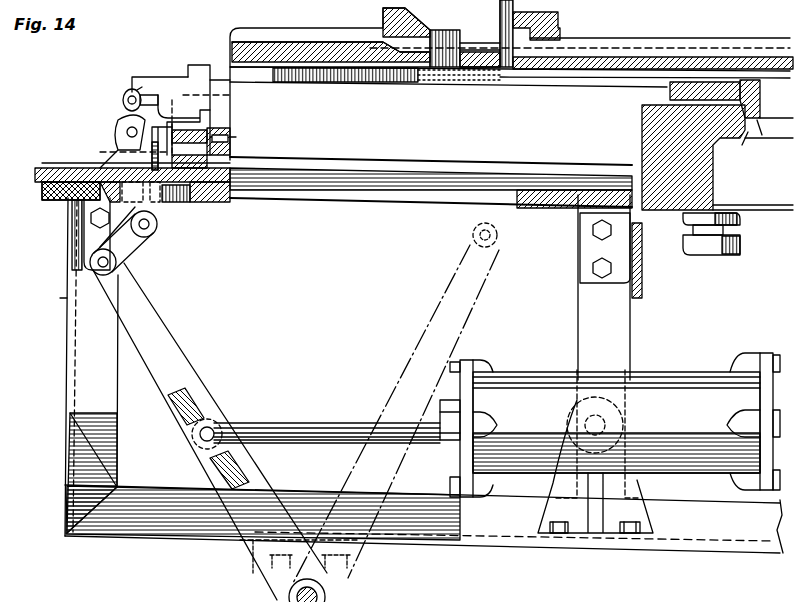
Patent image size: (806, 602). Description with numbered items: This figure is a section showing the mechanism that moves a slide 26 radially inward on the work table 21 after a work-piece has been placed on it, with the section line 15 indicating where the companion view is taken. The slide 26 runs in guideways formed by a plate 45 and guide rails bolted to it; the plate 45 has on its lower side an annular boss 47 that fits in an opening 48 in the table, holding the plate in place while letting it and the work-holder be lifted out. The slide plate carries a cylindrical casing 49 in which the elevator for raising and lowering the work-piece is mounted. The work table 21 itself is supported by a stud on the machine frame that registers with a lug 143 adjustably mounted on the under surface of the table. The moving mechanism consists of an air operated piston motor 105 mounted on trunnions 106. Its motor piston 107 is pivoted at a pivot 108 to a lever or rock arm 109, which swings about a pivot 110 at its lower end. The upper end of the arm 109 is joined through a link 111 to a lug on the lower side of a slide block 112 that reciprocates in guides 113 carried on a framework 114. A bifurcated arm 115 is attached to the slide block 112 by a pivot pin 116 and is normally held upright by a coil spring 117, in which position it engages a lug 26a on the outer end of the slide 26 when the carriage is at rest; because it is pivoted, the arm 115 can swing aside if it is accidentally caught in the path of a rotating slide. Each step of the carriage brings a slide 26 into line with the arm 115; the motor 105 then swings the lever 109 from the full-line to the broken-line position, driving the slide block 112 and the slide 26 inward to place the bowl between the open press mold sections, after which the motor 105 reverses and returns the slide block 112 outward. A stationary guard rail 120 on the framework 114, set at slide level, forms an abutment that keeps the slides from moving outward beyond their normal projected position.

The section line 15- 15 is at (156, 70).
The work table 21 is at (652, 135).
The slide 26 is at (603, 55).
The lug 26a is at (255, 72).
The plate 45 is at (670, 93).
The annular boss 47 is at (762, 135).
The opening 48 is at (742, 145).
The cylindrical casing 49 is at (557, 22).
The air operated piston motor 105 is at (518, 385).
The trunnions 106 is at (622, 398).
The motor piston 107 is at (323, 413).
The pivot 108 is at (210, 425).
The lever or rock arm 109 is at (173, 355).
The pivot 110 is at (320, 600).
The link 111 is at (186, 273).
The slide block 112 is at (48, 166).
The guides 113 is at (292, 173).
The framework 114 is at (78, 295).
The bifurcated arm 115 is at (230, 115).
The pivot pin 116 is at (230, 142).
The coil spring 117 is at (127, 90).
The stationary guard rail 120 is at (193, 60).
The lug 143 is at (717, 252).